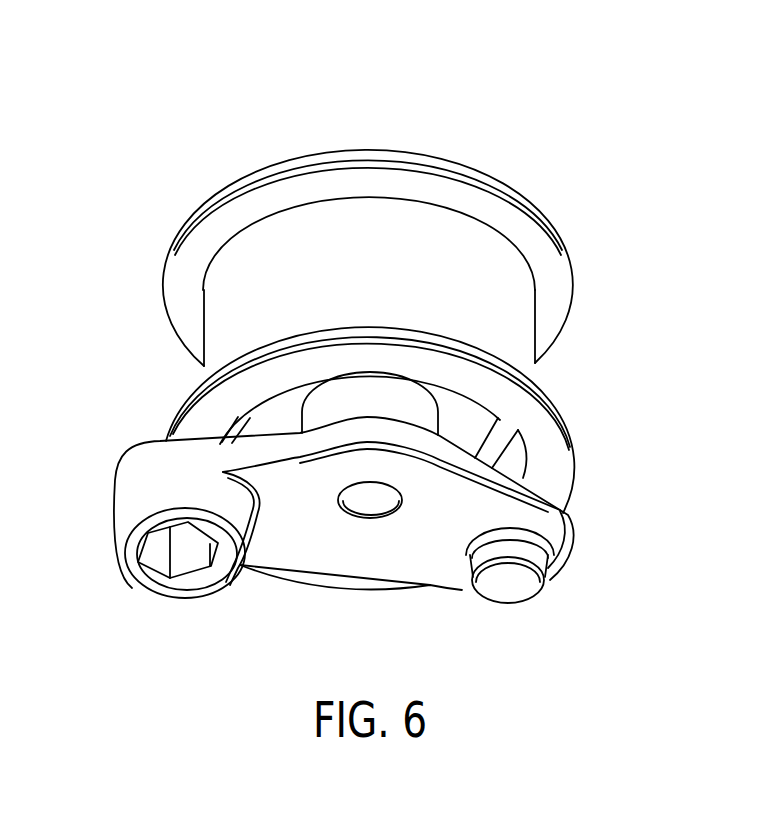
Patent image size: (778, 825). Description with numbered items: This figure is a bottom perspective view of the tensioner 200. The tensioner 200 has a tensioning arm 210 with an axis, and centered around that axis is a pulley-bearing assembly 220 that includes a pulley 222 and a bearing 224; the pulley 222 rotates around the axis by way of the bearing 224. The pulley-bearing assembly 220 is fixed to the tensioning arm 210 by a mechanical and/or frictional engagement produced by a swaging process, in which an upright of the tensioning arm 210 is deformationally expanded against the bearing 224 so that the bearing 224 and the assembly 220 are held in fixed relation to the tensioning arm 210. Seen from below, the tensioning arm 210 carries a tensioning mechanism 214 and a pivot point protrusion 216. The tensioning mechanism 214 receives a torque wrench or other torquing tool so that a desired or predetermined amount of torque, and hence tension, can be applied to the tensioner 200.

The tensioner 200 is at (181, 124).
The tensioning arm 210 is at (117, 449).
The tensioning mechanism 214 is at (118, 558).
The pivot point protrusion 216 is at (495, 600).
The pulley-bearing assembly 220 is at (538, 179).
The pulley 222 is at (570, 243).
The bearing 224 is at (574, 488).